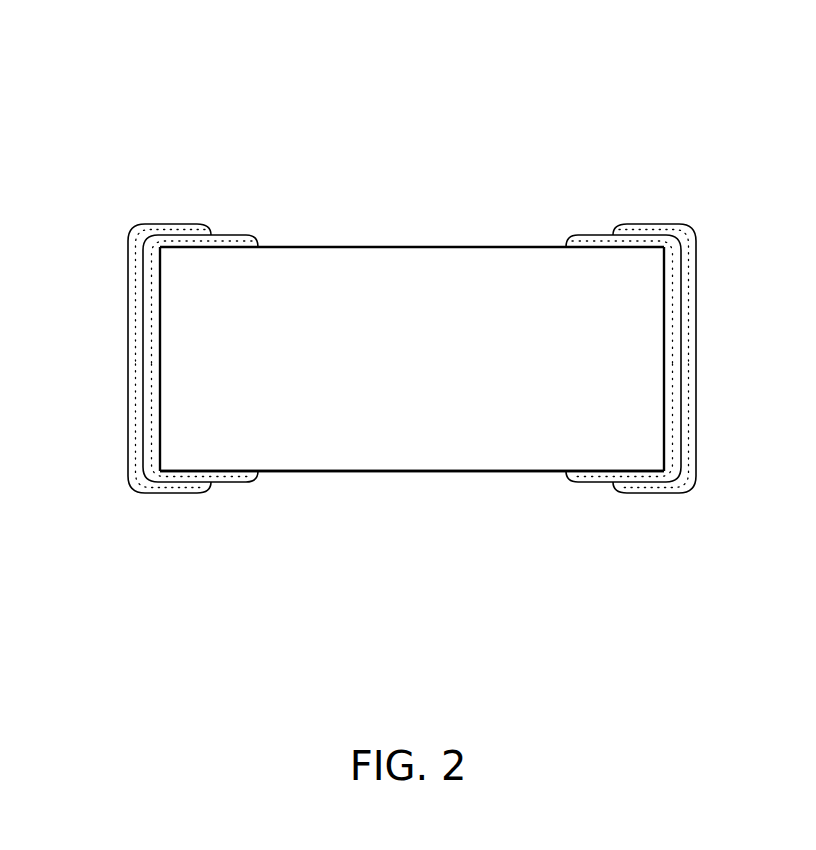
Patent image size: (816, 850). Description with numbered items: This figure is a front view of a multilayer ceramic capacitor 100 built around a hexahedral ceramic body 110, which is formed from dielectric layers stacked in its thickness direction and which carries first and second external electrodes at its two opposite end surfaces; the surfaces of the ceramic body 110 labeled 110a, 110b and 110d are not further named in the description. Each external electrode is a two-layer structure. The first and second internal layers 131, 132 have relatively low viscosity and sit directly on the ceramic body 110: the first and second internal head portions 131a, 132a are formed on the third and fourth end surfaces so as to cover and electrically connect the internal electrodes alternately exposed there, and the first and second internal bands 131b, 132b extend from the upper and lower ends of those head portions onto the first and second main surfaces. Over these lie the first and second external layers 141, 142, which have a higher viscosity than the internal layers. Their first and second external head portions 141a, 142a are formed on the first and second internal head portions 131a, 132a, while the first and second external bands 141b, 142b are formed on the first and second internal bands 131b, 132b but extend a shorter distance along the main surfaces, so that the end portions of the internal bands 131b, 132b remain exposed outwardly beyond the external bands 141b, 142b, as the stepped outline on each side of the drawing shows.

The multilayer ceramic capacitor 100 is at (109, 34).
The ceramic body 110 is at (428, 247).
The first surface of body 110a is at (335, 247).
The second surface of body 110b is at (373, 471).
The fourth surface of body 110d is at (465, 443).
The first internal layer 131 is at (245, 134).
The first internal head portion 131a is at (148, 293).
The first internal band 131b is at (226, 238).
The second internal layer 132 is at (582, 134).
The second internal head portion 132a is at (676, 294).
The second internal band 132b is at (600, 238).
The first external layer 141 is at (245, 581).
The first external head portion 141a is at (137, 422).
The first external band 141b is at (187, 490).
The second external layer 142 is at (727, 582).
The second external head portion 142a is at (688, 423).
The second external band 142b is at (598, 484).